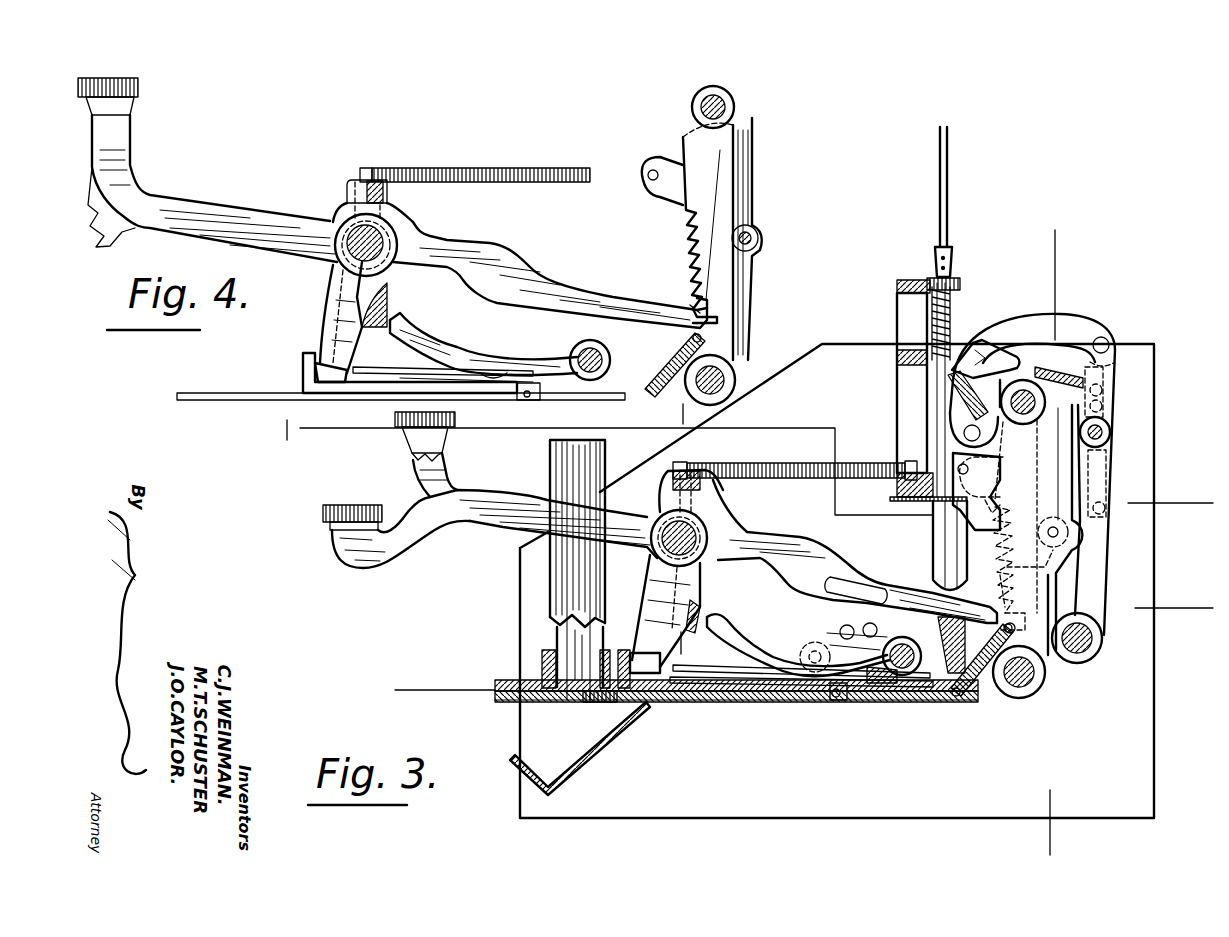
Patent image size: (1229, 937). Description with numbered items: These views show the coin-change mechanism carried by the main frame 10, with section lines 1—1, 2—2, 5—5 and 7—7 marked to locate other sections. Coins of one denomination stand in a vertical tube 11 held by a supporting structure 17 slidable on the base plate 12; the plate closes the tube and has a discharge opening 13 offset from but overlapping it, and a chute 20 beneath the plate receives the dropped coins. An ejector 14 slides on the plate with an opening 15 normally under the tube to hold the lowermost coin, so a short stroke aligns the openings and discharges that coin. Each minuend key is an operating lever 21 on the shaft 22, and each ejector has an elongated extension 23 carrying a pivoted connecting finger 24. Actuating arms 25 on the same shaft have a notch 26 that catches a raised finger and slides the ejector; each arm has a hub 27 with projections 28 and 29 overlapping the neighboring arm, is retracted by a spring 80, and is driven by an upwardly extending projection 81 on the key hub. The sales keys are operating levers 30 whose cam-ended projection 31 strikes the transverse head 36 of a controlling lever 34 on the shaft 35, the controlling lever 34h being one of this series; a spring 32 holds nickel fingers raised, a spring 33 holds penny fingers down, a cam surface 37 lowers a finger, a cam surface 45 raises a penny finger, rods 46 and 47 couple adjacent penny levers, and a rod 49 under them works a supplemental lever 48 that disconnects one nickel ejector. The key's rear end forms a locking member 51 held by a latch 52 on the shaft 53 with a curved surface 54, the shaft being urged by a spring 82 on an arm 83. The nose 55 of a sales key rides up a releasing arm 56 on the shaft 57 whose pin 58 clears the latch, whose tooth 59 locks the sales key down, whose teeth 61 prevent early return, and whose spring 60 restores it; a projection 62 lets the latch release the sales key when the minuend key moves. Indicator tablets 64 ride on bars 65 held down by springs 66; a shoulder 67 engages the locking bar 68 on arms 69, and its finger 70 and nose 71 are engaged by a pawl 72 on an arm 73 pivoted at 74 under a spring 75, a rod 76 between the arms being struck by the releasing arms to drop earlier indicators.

In FIG. 3, the section line 1— 1 is at (746, 477).
In FIG. 3, the section line 2— 2 is at (796, 649).
In FIG. 3, the section line 5— 5 is at (1063, 538).
In FIG. 4, the section line 7— 7 is at (672, 417).
In FIG. 3, the section line 7— 7 is at (690, 648).
In FIG. 3, the main frame 10 is at (1140, 487).
In FIG. 3, the vertical tube 11 is at (567, 580).
In FIG. 3, the base plate 12 is at (513, 703).
In FIG. 3, the discharge opening 13 is at (598, 702).
In FIG. 4, the ejector 14 is at (250, 399).
In FIG. 3, the ejector 14 is at (537, 703).
In FIG. 3, the opening 15 is at (570, 662).
In FIG. 3, the supporting structure 17 is at (500, 679).
In FIG. 3, the chute 20 is at (602, 752).
In FIG. 4, the operating lever 21 is at (110, 144).
In FIG. 3, the operating lever 21 is at (437, 482).
In FIG. 4, the shaft 22 is at (357, 240).
In FIG. 3, the shaft 22 is at (708, 530).
In FIG. 4, the elongated extension 23 is at (372, 393).
In FIG. 3, the elongated extension 23 is at (756, 687).
In FIG. 4, the connecting finger 24 is at (403, 370).
In FIG. 3, the connecting finger 24 is at (723, 672).
In FIG. 4, the actuating arm 25 is at (336, 303).
In FIG. 3, the actuating arm 25 is at (647, 592).
In FIG. 4, the notch 26 is at (335, 365).
In FIG. 3, the notch 26 is at (660, 672).
In FIG. 4, the hub 27 is at (343, 210).
In FIG. 3, the hub 27 is at (660, 510).
In FIG. 4, the projection 28 is at (352, 178).
In FIG. 3, the projection 28 is at (672, 478).
In FIG. 4, the projection 29 is at (380, 172).
In FIG. 3, the projection 29 is at (713, 477).
In FIG. 3, the operating lever 30 is at (343, 545).
In FIG. 4, the projection 31 is at (385, 298).
In FIG. 3, the projection 31 is at (690, 600).
In FIG. 4, the spring 32 is at (476, 400).
In FIG. 3, the spring 33 is at (852, 700).
In FIG. 3, the controlling lever 34 is at (764, 648).
In FIG. 4, the controlling lever 34h is at (490, 358).
In FIG. 4, the shaft 35 is at (585, 352).
In FIG. 3, the shaft 35 is at (905, 646).
In FIG. 4, the transverse head 36 is at (403, 313).
In FIG. 3, the transverse head 36 is at (712, 614).
In FIG. 4, the cam surface 37 is at (442, 373).
In FIG. 3, the cam surface 45 is at (880, 682).
In FIG. 3, the rod 46 is at (840, 628).
In FIG. 3, the rod 47 is at (866, 625).
In FIG. 3, the supplemental controlling lever 48 is at (807, 675).
In FIG. 3, the rod 49 is at (820, 670).
In FIG. 4, the locking member 51 is at (695, 310).
In FIG. 3, the locking member 51 is at (1014, 629).
In FIG. 4, the latch 52 is at (708, 223).
In FIG. 3, the latch 52 is at (1005, 432).
In FIG. 4, the shaft 53 is at (692, 105).
In FIG. 3, the shaft 53 is at (1025, 424).
In FIG. 3, the curved surface 54 is at (1058, 567).
In FIG. 3, the nose 55 is at (1000, 605).
In FIG. 4, the releasing arm 56 is at (745, 187).
In FIG. 3, the releasing arm 56 is at (1038, 597).
In FIG. 4, the shaft 57 is at (723, 378).
In FIG. 3, the shaft 57 is at (1036, 676).
In FIG. 4, the pin 58 is at (643, 165).
In FIG. 3, the pin 58 is at (993, 478).
In FIG. 3, the tooth 59 is at (992, 513).
In FIG. 4, the spring 60 is at (680, 363).
In FIG. 3, the spring 60 is at (975, 678).
In FIG. 3, the teeth 61 is at (1000, 538).
In FIG. 4, the projection 62 is at (757, 234).
In FIG. 3, the projection 62 is at (1068, 540).
In FIG. 3, the tablet 64 is at (947, 198).
In FIG. 3, the bar 65 is at (936, 544).
In FIG. 3, the spring 66 is at (950, 327).
In FIG. 3, the shoulder 67 is at (950, 445).
In FIG. 3, the locking bar 68 is at (950, 426).
In FIG. 3, the arm 69 is at (960, 400).
In FIG. 3, the finger 70 is at (1003, 352).
In FIG. 3, the nose 71 is at (993, 352).
In FIG. 3, the pawl 72 is at (1070, 320).
In FIG. 3, the arm 73 is at (1107, 372).
In FIG. 3, the pivot 74 is at (1090, 648).
In FIG. 3, the spring 75 is at (1080, 373).
In FIG. 3, the rod 76 is at (1104, 433).
In FIG. 4, the spring 80 is at (480, 168).
In FIG. 3, the spring 80 is at (770, 469).
In FIG. 4, the projection 81 is at (400, 200).
In FIG. 3, the projection 81 is at (707, 497).
In FIG. 3, the spring 82 is at (1106, 460).
In FIG. 3, the arm 83 is at (1060, 400).